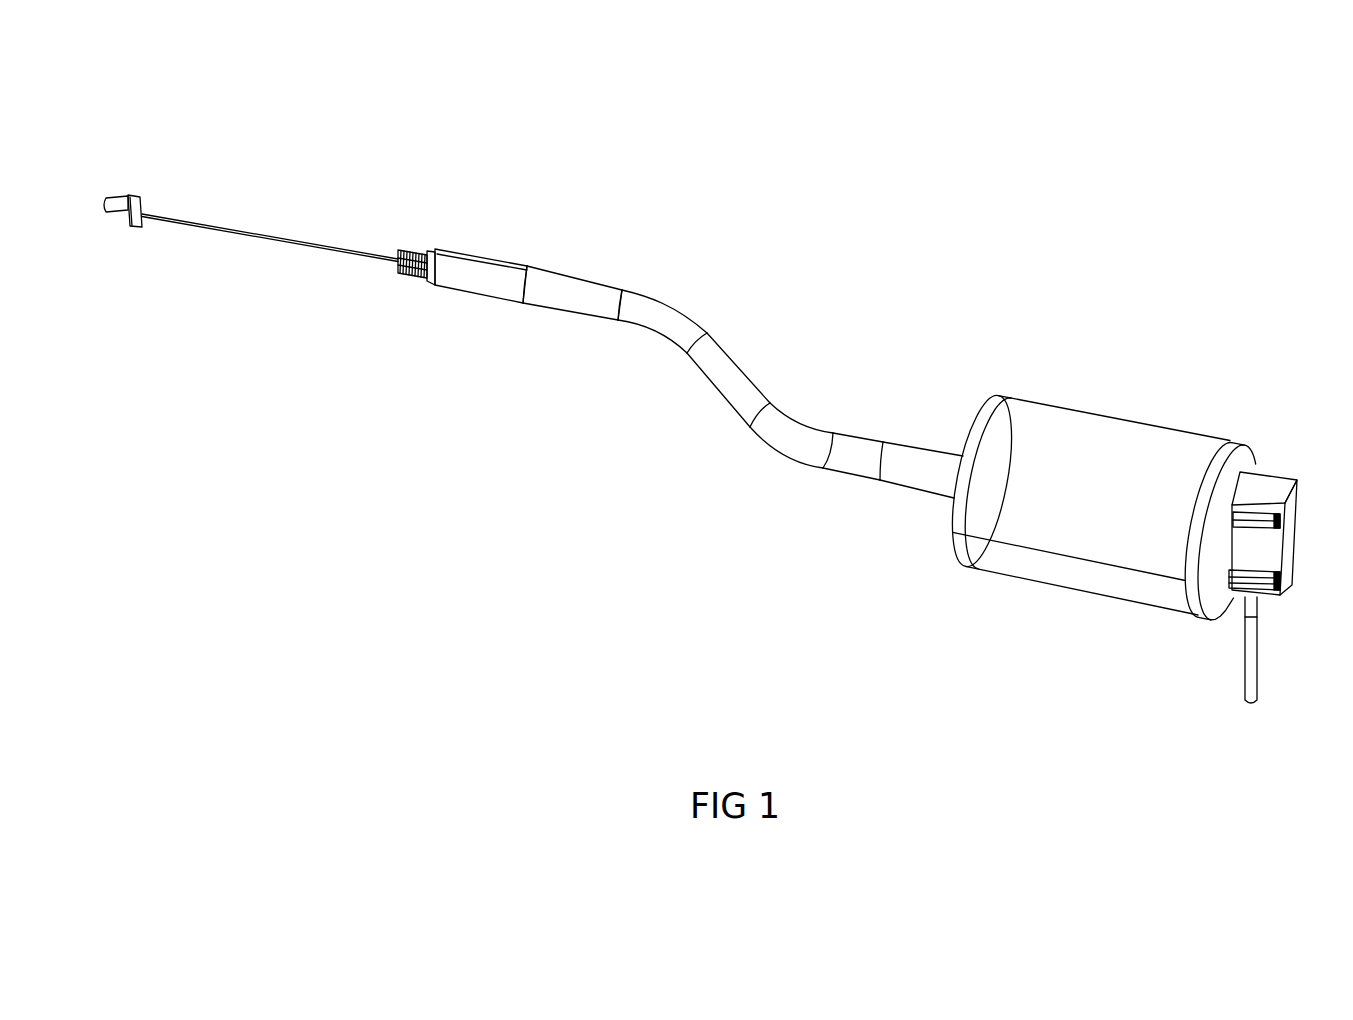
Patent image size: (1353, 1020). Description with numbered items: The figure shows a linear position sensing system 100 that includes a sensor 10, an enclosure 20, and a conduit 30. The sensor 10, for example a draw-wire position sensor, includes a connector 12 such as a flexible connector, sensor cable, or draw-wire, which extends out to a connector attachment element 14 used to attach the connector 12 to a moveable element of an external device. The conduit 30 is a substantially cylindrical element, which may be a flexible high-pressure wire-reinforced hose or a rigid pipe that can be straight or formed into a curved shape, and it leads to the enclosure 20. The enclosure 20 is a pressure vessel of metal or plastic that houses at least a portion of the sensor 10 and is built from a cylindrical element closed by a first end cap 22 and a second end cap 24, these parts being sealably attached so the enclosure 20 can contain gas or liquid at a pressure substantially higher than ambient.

The linear position sensing system 100 is at (810, 109).
The connector attachment element 14 is at (122, 195).
The connector 12 is at (247, 230).
The sensor 10 is at (348, 230).
The conduit 30 is at (670, 292).
The first end cap 22 is at (993, 395).
The enclosure 20 is at (1115, 394).
The second end cap 24 is at (1243, 442).